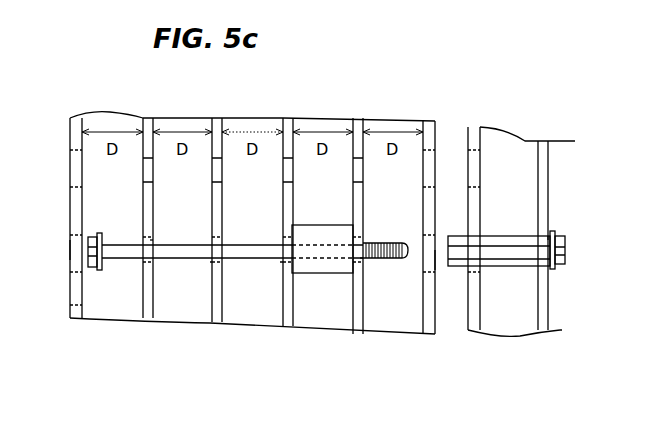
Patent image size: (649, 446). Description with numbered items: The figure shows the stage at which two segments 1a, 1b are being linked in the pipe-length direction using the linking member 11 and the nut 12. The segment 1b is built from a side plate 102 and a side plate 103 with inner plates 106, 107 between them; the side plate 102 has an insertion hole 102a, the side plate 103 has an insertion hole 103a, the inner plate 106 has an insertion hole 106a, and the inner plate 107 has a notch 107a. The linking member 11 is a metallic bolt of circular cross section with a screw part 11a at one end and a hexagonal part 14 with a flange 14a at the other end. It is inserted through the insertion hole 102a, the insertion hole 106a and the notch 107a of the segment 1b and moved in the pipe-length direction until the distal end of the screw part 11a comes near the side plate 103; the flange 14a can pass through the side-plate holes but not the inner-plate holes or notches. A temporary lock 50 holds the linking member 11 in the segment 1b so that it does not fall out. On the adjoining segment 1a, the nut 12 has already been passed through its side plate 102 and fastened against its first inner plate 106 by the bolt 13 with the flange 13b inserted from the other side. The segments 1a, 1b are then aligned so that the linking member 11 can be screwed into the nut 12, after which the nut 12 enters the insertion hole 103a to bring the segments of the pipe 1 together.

The segment 1a is at (585, 168).
The segment 1b is at (316, 88).
The wall panel 1 is at (604, 272).
The linking member 11 is at (256, 245).
The screw part 11a is at (395, 243).
The nut 12 is at (509, 243).
The bolt 13 is at (568, 240).
The flange 13b is at (552, 268).
The hexagonal part 14 is at (93, 270).
The flange 14a is at (101, 270).
The temporary lock 50 is at (322, 225).
The side plate 102 is at (76, 118).
The insertion hole 102a is at (75, 248).
The side plate 103 is at (424, 121).
The insertion hole 103a is at (432, 262).
The inner plate 106 is at (147, 118).
The insertion hole 106a is at (150, 240).
The inner plate 107 is at (216, 118).
The notch 107a is at (210, 262).